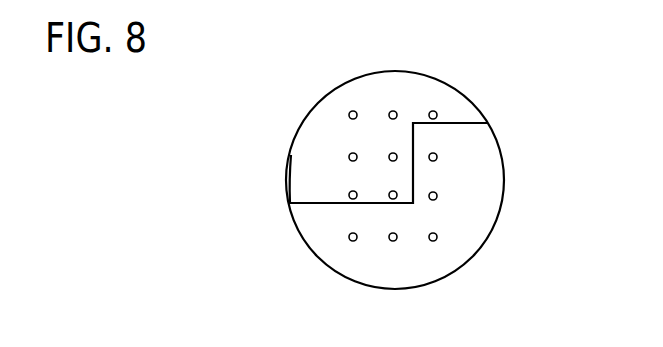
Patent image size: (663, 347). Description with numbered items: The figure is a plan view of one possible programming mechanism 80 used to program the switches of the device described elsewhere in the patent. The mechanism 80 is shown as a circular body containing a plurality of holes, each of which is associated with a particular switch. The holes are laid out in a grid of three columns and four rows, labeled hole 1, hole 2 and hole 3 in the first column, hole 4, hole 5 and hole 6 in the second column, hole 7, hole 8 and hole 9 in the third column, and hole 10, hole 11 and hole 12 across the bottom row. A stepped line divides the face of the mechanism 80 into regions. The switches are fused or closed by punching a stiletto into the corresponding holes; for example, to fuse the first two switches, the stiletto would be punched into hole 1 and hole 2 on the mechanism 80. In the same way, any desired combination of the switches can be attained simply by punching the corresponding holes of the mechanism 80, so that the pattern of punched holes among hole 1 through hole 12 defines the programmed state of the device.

The programming mechanism 80 is at (425, 184).
The hole 1 is at (353, 102).
The hole 2 is at (353, 143).
The hole 3 is at (353, 182).
The hole 4 is at (393, 102).
The hole 5 is at (393, 143).
The hole 6 is at (393, 182).
The hole 7 is at (433, 102).
The hole 8 is at (433, 143).
The hole 9 is at (433, 182).
The hole 10 is at (352, 224).
The hole 11 is at (392, 224).
The hole 12 is at (432, 224).